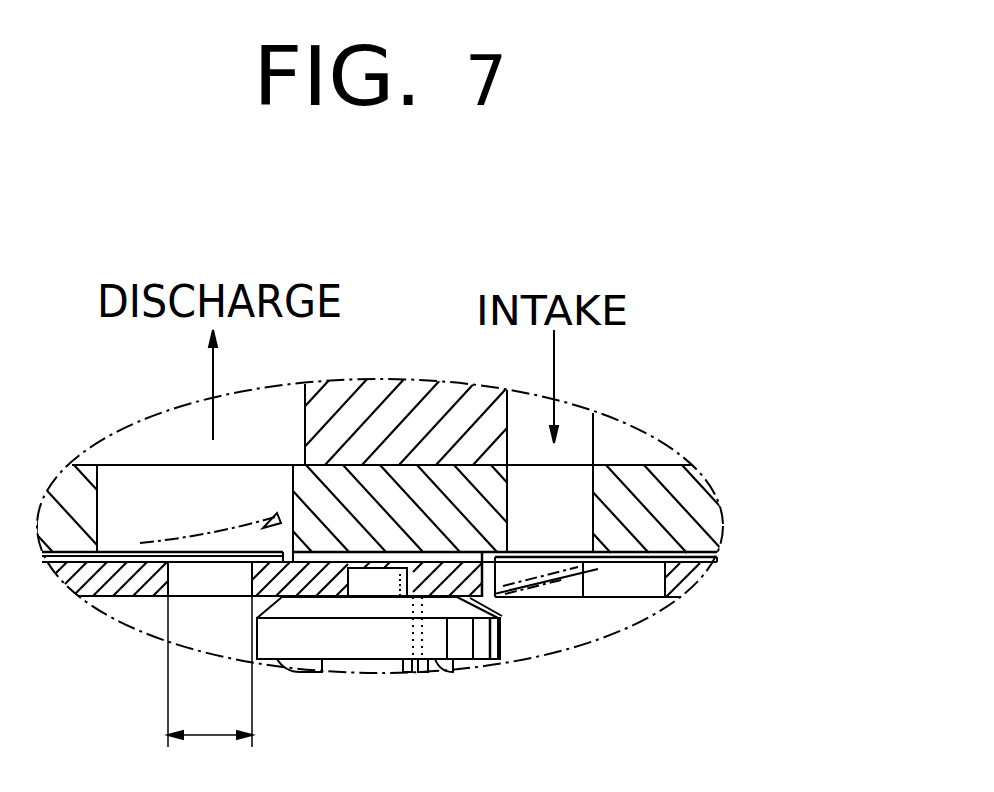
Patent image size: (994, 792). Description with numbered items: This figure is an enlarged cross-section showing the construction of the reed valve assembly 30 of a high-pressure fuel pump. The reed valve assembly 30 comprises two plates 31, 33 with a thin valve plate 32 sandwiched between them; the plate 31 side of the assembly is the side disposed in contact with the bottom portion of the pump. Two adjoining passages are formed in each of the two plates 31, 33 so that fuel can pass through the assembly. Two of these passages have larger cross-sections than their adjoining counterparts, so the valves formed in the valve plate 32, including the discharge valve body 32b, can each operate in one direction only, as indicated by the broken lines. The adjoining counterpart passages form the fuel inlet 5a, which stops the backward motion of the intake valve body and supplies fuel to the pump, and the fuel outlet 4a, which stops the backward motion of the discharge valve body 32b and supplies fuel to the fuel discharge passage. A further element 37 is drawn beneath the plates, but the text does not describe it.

The reed valve assembly 30 is at (720, 493).
The plate 31 is at (707, 523).
The valve plate 32 is at (713, 560).
The discharge valve body 32b is at (167, 594).
The plate 33 is at (683, 582).
The fuel outlet 4a is at (207, 588).
The fuel inlet 5a is at (563, 493).
The piston 37 is at (414, 675).